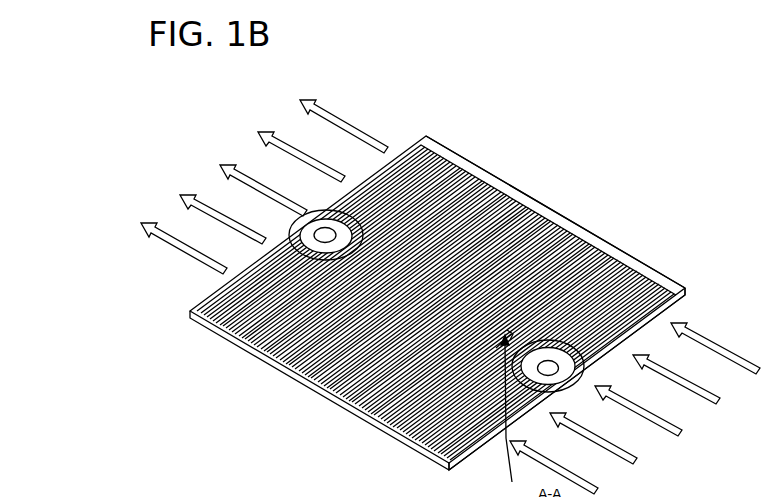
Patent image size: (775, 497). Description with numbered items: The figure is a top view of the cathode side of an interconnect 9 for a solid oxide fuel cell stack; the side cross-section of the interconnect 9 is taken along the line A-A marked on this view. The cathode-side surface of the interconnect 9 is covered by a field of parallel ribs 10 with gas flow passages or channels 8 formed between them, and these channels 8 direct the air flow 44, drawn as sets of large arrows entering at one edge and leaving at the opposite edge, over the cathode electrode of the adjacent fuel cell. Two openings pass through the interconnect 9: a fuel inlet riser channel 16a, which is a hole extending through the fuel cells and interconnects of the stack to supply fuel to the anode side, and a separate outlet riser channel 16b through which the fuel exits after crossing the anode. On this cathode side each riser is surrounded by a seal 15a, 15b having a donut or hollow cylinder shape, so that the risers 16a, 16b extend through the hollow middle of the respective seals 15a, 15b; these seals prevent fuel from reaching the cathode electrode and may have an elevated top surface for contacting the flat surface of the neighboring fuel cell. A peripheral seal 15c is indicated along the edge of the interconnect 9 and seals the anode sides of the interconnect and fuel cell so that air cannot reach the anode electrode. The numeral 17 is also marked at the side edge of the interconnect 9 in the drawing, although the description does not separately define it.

The gas flow channels 8 is at (452, 172).
The interconnect 9 is at (702, 268).
The ribs 10 is at (484, 190).
The seal 15a is at (322, 206).
The seal 15b is at (560, 356).
The peripheral seal 15c is at (600, 237).
The riser channel 16a is at (298, 225).
The outlet riser channel 16b is at (541, 356).
The side surface 17 is at (683, 292).
The air flow 44 is at (354, 128).